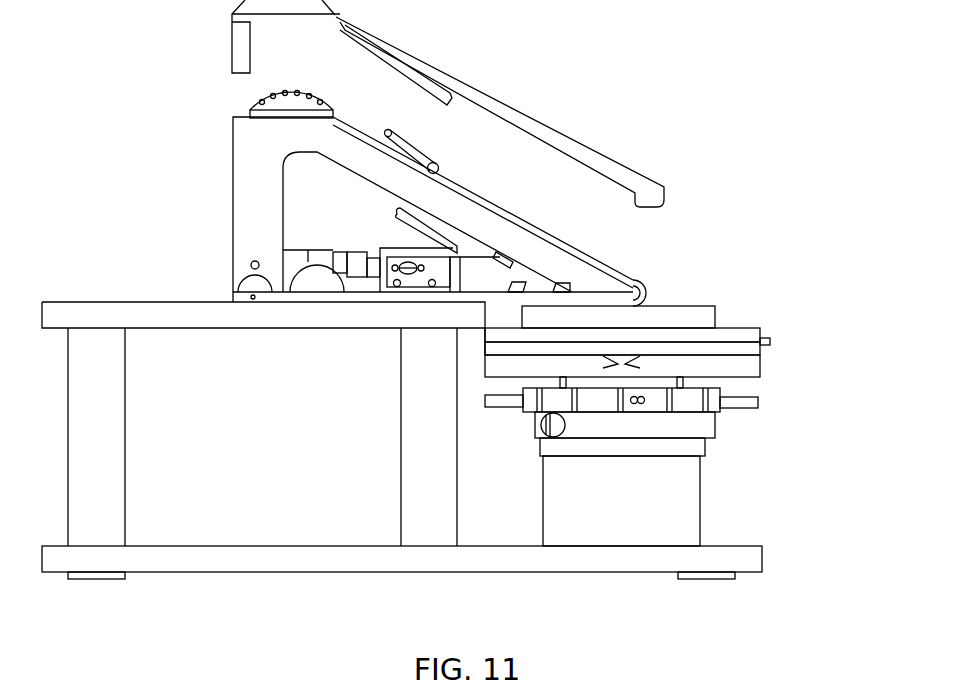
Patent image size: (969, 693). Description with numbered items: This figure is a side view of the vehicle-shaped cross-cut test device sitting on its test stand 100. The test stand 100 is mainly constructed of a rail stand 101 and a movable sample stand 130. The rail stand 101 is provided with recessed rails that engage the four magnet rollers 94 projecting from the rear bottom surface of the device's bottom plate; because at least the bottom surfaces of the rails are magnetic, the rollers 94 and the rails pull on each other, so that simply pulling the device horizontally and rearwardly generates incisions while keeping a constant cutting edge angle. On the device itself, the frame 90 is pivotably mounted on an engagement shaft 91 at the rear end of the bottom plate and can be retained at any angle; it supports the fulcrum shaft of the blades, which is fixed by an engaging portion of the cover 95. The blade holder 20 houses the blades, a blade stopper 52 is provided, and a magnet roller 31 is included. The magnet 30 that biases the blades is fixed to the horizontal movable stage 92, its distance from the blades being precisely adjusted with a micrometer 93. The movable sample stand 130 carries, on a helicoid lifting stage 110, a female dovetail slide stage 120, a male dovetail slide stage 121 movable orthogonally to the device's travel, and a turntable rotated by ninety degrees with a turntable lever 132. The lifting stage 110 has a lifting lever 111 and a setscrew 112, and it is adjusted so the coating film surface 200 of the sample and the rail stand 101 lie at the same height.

The blade holder 20 is at (305, 101).
The cover 95 is at (460, 88).
The blade stopper 52 is at (410, 150).
The frame 90 is at (247, 152).
The engagement shaft 91 is at (250, 260).
The micrometer 93 is at (328, 258).
The horizontal movable stage 92 is at (410, 253).
The magnet 30 is at (525, 265).
The magnet roller 31 is at (647, 293).
The coating film surface 200 is at (700, 305).
The movable sample stand 130 is at (737, 332).
The turntable lever 132 is at (772, 340).
The male dovetail slide stage 121 is at (743, 348).
The female dovetail slide stage 120 is at (747, 365).
The lifting lever 111 is at (750, 403).
The helicoid lifting stage 110 is at (678, 500).
The setscrew 112 is at (548, 418).
The rail stand 101 is at (133, 300).
The magnet rollers 94 is at (263, 290).
The test stand 100 is at (398, 565).